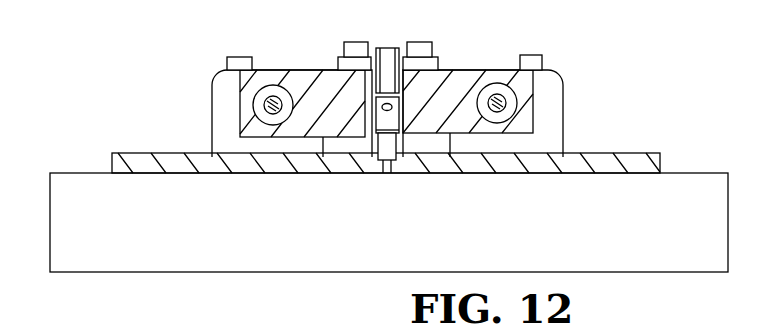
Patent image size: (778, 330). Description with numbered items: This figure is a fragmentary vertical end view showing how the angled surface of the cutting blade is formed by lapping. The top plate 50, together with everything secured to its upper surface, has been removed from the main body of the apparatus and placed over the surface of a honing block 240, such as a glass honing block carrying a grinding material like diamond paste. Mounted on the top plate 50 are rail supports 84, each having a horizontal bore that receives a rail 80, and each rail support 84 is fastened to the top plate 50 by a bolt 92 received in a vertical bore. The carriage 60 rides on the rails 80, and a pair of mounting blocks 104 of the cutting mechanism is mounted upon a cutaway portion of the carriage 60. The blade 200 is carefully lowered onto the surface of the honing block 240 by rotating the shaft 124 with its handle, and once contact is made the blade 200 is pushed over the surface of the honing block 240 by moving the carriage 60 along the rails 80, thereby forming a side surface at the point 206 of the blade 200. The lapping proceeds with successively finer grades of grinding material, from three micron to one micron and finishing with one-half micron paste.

The top plate 50 is at (405, 141).
The carriage 60 is at (505, 38).
The rail 80 is at (391, 108).
The rail support 84 is at (382, 104).
The bolt 92 is at (394, 42).
The mounting block 104 is at (377, 39).
The shaft 124 is at (346, 164).
The blade 200 is at (389, 82).
The point of blade 206 is at (385, 194).
The honing block 240 is at (690, 233).